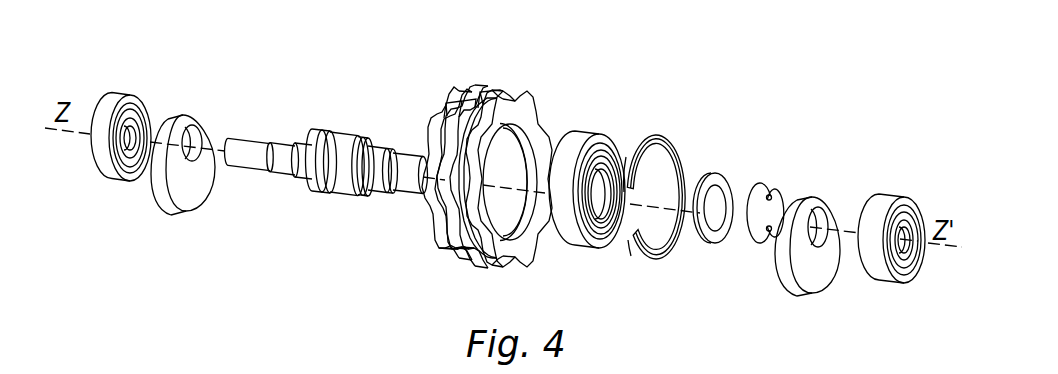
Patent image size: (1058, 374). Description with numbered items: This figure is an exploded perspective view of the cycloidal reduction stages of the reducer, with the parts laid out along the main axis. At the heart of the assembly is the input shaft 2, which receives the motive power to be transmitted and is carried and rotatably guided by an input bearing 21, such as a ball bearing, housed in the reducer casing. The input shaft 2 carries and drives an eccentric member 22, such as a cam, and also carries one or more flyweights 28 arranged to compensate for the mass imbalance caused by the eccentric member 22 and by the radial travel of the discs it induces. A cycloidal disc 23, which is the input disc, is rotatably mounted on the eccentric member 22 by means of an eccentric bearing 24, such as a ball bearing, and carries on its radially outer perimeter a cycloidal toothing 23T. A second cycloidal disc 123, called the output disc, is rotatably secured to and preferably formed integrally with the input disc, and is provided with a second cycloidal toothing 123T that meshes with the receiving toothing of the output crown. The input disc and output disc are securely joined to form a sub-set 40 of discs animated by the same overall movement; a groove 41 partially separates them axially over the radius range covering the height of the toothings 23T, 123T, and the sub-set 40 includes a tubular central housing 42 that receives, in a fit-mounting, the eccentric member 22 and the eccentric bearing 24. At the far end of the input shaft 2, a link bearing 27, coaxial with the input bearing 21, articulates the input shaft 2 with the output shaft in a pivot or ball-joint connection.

The input shaft 2 is at (326, 141).
The input bearing 21 is at (117, 102).
The eccentric member 22 is at (353, 141).
The cycloidal disc 23 is at (426, 147).
The cycloidal toothing 23T is at (464, 92).
The eccentric bearing 24 is at (583, 136).
The link bearing 27 is at (883, 203).
The flyweight 28 is at (165, 203).
The sub-set of discs 40 is at (441, 273).
The groove 41 is at (483, 86).
The tubular central housing 42 is at (505, 212).
The second cycloidal disc 123 is at (539, 180).
The second cycloidal toothing 123T is at (525, 92).